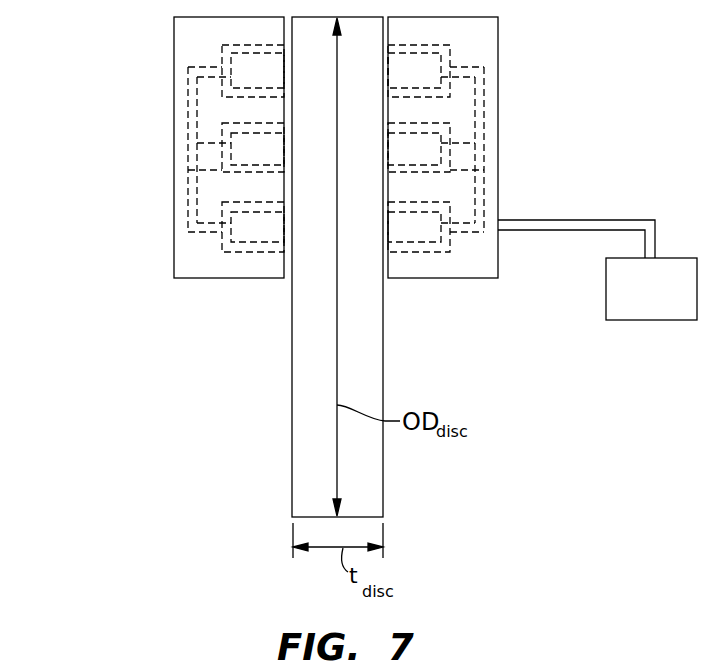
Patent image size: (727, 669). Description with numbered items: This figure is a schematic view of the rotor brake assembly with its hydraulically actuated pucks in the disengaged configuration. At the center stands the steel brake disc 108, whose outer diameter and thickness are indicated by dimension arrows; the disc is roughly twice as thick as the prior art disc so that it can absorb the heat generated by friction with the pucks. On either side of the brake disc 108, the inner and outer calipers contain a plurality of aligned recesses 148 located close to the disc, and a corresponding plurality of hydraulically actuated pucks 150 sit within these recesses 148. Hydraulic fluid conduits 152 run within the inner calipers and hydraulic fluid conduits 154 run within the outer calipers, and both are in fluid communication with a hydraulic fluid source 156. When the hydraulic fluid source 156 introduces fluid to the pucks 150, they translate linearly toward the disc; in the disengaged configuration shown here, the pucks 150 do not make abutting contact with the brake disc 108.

The brake disc 108 is at (292, 432).
The aligned recesses 148 is at (228, 97).
The hydraulically actuated pucks 150 is at (260, 243).
The hydraulic fluid conduits 152 is at (188, 88).
The hydraulic fluid conduits 154 is at (498, 88).
The hydraulic fluid source 156 is at (622, 321).